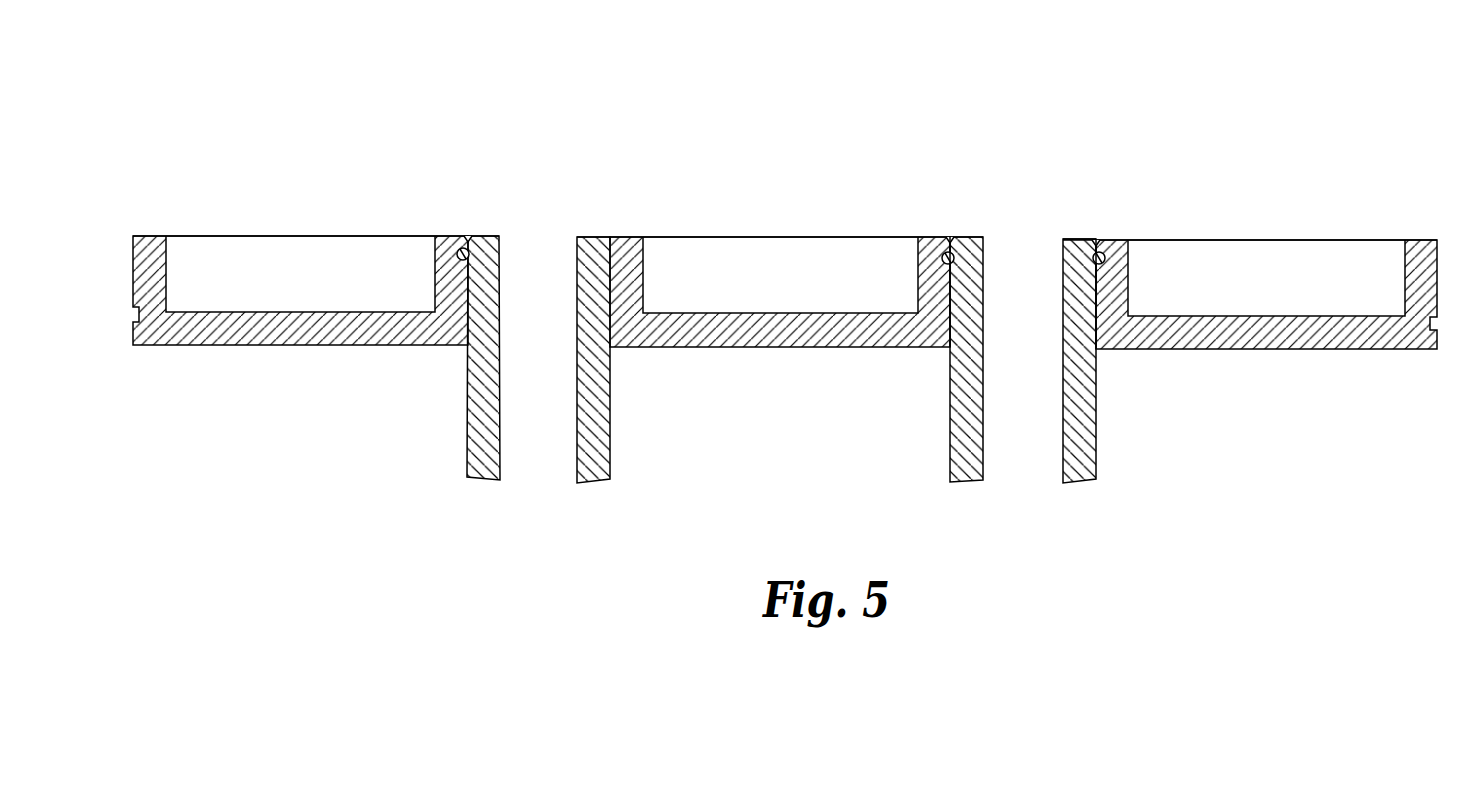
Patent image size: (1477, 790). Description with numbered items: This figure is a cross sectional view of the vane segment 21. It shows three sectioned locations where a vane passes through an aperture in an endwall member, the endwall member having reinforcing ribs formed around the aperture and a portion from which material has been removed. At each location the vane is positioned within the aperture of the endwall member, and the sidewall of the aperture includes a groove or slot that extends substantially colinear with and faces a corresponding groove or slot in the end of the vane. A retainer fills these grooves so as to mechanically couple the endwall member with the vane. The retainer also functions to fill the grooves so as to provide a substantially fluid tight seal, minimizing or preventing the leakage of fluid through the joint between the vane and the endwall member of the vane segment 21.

The vane segment 21 is at (1373, 102).